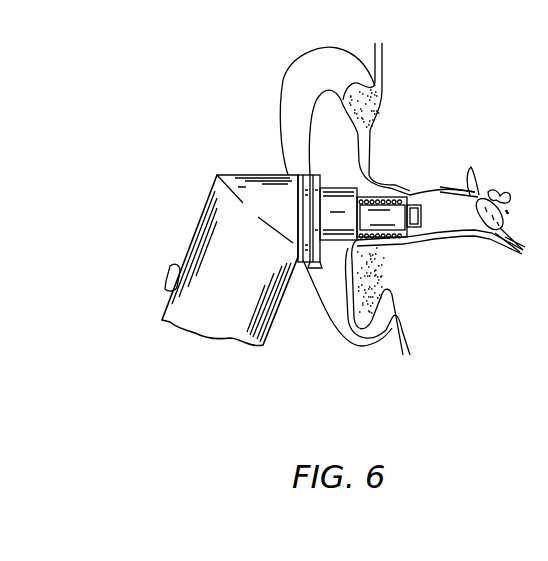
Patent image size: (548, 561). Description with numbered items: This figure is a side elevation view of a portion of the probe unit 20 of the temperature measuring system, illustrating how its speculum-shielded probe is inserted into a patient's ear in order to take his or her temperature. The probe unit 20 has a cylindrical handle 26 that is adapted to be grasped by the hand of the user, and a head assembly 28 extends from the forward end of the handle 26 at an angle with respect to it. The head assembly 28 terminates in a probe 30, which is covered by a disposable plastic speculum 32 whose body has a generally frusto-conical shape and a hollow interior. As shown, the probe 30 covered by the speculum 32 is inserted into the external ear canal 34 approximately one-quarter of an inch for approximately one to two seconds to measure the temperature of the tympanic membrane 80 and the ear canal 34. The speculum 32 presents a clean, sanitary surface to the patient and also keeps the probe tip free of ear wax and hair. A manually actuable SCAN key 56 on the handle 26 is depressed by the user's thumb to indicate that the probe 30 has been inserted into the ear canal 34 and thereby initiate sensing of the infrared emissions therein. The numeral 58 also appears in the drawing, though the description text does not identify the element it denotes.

The probe unit 20 is at (232, 168).
The cylindrical handle 26 is at (190, 250).
The head assembly 28 is at (337, 178).
The probe 30 is at (393, 233).
The disposable plastic speculum 32 is at (391, 193).
The external ear canal 34 is at (472, 224).
The SCAN key 56 is at (166, 275).
The ear 58 is at (414, 199).
The tympanic membrane 80 is at (488, 195).